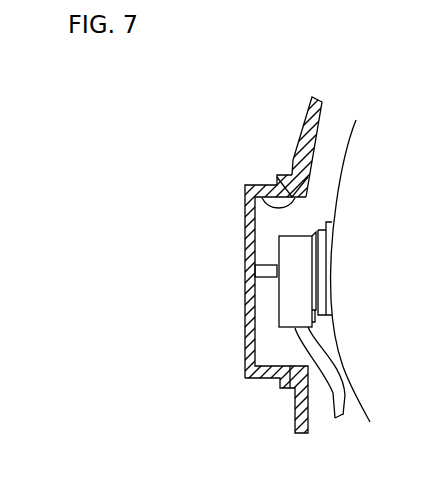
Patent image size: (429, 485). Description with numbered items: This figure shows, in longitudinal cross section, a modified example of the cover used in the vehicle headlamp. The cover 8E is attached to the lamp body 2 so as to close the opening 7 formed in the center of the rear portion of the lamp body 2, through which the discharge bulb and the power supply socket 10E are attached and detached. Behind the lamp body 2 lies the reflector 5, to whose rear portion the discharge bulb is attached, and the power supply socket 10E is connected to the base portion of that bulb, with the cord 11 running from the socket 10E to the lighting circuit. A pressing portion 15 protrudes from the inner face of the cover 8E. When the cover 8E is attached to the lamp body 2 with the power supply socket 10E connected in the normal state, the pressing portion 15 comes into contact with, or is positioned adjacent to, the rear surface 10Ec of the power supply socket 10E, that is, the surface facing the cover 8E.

The lamp body 2 is at (302, 122).
The reflector 5 is at (345, 137).
The opening 7 is at (262, 198).
The cover 8E is at (245, 218).
The pressing portion 15 is at (269, 264).
The rear surface 10Ec is at (279, 298).
The power supply socket 10E is at (279, 320).
The cord 11 is at (333, 392).